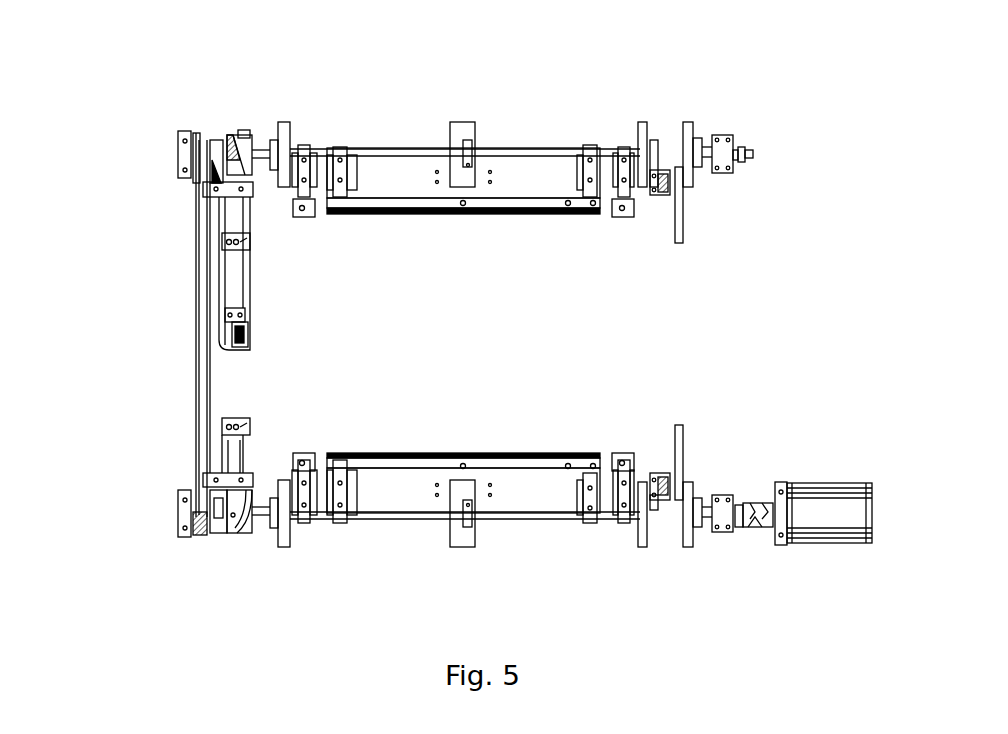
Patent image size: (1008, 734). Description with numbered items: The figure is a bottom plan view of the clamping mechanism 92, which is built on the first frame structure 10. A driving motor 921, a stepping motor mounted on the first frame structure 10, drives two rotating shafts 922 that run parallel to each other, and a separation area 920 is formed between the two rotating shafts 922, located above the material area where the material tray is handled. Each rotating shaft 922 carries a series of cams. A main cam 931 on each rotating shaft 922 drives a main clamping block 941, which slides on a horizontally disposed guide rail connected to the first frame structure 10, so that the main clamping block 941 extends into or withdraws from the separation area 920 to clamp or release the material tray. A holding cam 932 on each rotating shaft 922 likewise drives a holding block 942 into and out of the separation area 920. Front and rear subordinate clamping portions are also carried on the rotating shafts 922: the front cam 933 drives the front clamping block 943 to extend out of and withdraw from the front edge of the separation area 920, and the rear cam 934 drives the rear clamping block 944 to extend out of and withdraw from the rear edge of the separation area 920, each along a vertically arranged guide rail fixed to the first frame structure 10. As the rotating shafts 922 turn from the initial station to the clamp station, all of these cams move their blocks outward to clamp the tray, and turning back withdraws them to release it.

The clamping mechanism 92 is at (97, 21).
The separation area 920 is at (552, 343).
The first frame structure 10 is at (185, 510).
The driving motor 921 is at (830, 517).
The rotating shafts 922 is at (260, 153).
The main cam 931 is at (458, 157).
The holding cam 932 is at (285, 140).
The front cam 933 is at (642, 155).
The rear cam 934 is at (230, 188).
The main clamping block 941 is at (400, 173).
The holding block 942 is at (312, 210).
The front clamping block 943 is at (678, 215).
The rear clamping block 944 is at (233, 242).